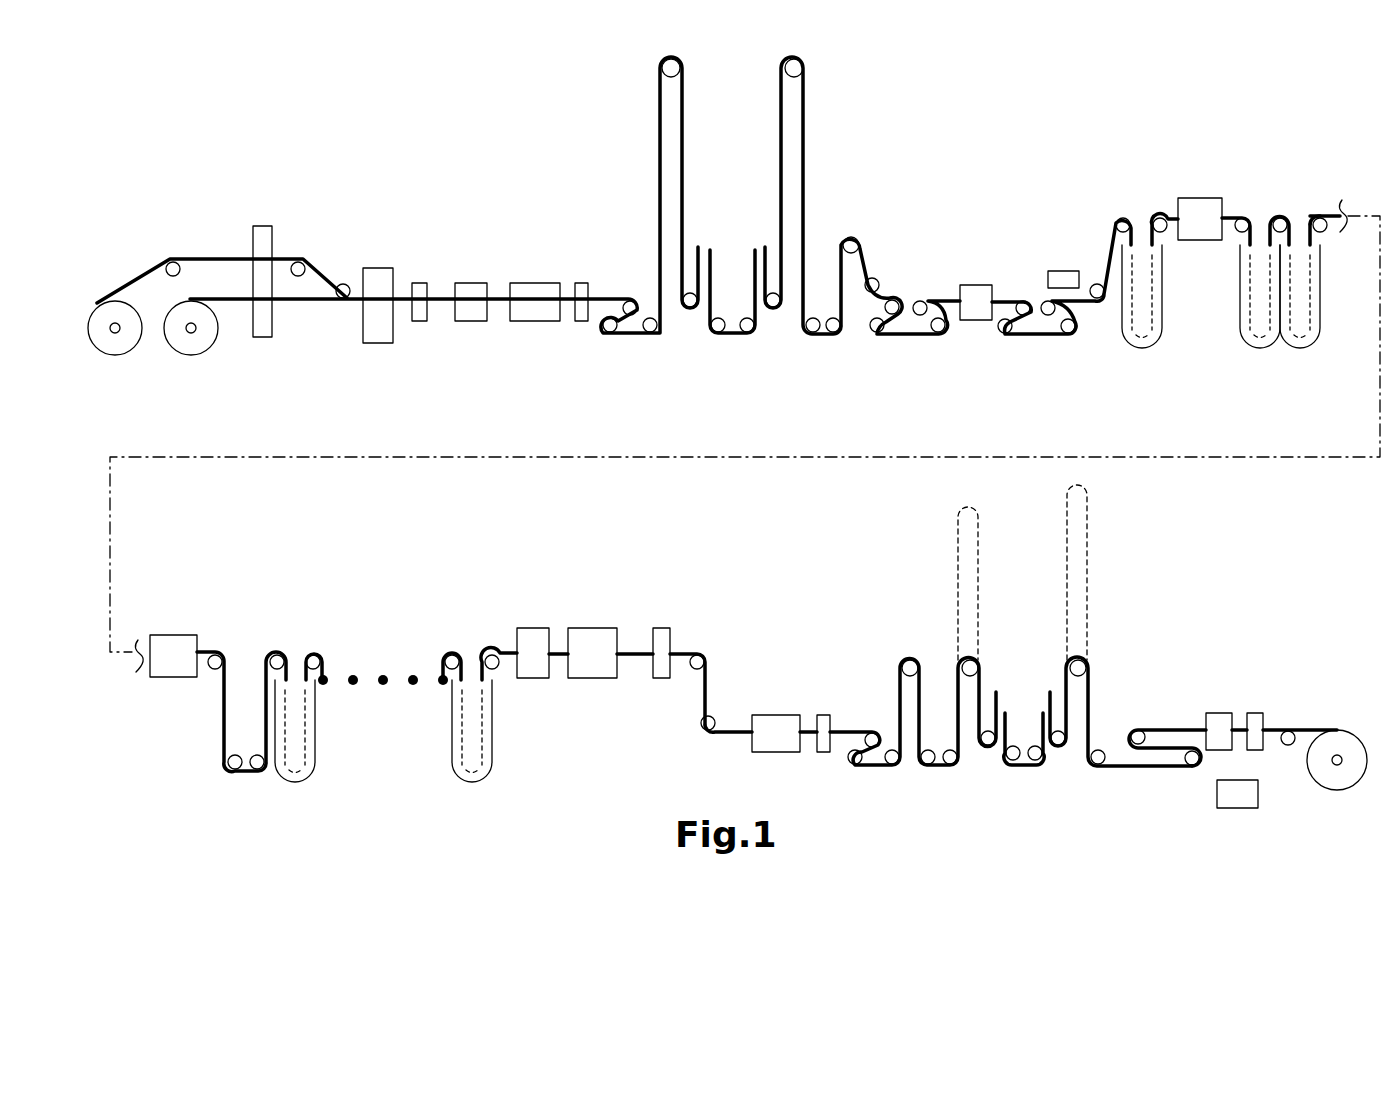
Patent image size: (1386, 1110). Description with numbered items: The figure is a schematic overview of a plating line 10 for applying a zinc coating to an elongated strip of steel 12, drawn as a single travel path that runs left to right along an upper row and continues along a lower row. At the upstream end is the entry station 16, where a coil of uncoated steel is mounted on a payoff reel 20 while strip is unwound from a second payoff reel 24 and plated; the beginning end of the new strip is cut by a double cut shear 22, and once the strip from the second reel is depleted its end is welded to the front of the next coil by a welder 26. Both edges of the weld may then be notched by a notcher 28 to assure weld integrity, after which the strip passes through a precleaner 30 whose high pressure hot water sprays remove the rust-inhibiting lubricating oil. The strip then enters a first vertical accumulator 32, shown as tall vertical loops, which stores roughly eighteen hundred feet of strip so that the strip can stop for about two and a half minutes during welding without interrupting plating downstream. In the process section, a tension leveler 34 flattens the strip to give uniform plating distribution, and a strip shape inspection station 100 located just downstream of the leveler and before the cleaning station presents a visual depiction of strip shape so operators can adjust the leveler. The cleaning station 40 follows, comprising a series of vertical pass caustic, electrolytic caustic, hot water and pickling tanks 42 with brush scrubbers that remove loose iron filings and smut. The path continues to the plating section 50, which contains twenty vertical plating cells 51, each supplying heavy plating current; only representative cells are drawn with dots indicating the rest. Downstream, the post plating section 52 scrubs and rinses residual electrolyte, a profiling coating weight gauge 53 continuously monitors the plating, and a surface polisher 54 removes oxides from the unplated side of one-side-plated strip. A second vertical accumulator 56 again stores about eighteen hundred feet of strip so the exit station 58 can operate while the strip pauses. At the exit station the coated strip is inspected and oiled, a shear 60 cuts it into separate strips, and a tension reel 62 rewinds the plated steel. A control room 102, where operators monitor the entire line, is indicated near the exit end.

The plating line 10 is at (963, 113).
The strip of steel 12 is at (805, 160).
The entry station 16 is at (238, 187).
The payoff reel 20 is at (198, 350).
The double cut shear 22 is at (262, 235).
The second payoff reel 24 is at (122, 348).
The welder 26 is at (377, 280).
The notcher 28 is at (420, 288).
The precleaner 30 is at (468, 312).
The first vertical accumulator 32 is at (640, 150).
The tension leveler 34 is at (973, 293).
The cleaning station 40 is at (1205, 182).
The tanks 42 is at (1295, 343).
The plating section 50 is at (373, 618).
The vertical plating cell 51 is at (310, 733).
The post plating section 52 is at (595, 638).
The profiling coating weight gauge 53 is at (662, 635).
The surface polisher 54 is at (782, 725).
The second vertical accumulator 56 is at (927, 598).
The exit station 58 is at (1215, 655).
The shear 60 is at (1253, 722).
The tension reel 62 is at (1350, 748).
The strip shape inspection station 100 is at (1065, 277).
The control room 102 is at (1240, 800).